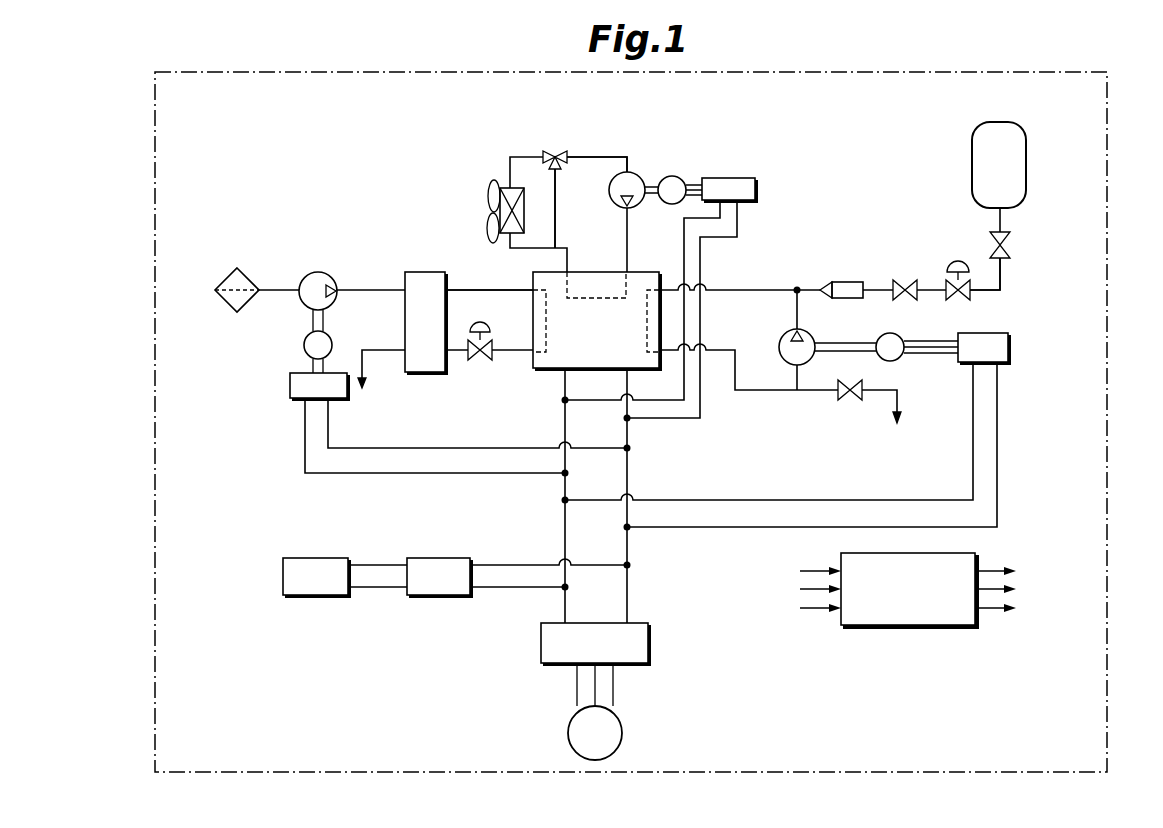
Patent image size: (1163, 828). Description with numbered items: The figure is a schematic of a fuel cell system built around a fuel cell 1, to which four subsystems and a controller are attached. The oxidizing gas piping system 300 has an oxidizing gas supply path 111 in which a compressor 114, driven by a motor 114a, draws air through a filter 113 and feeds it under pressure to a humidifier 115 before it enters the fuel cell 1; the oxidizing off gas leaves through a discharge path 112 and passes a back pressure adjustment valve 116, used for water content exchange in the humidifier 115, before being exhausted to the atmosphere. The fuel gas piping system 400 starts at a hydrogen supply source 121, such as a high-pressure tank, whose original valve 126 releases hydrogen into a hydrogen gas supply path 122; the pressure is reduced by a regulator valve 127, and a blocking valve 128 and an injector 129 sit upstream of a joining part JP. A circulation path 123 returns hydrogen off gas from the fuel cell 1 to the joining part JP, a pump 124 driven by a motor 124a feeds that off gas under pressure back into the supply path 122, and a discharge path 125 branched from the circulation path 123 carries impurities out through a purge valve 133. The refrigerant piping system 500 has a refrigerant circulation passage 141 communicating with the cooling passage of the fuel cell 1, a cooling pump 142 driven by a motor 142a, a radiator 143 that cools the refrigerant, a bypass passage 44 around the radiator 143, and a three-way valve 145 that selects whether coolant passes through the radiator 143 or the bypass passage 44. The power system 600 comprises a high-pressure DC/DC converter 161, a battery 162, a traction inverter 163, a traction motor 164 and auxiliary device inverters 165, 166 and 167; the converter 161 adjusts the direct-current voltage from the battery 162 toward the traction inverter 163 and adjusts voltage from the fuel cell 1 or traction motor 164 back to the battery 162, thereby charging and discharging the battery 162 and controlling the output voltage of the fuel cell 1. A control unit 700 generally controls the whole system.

The fuel cell 1 is at (540, 372).
The bypass passage 44 is at (557, 207).
The oxidizing gas supply path 111 is at (475, 289).
The discharge path 112 is at (376, 358).
The filter 113 is at (247, 268).
The compressor 114 is at (314, 272).
The motor 114a is at (304, 345).
The humidifier 115 is at (422, 374).
The back pressure adjustment valve 116 is at (478, 362).
The hydrogen supply source 121 is at (1027, 163).
The hydrogen gas supply path 122 is at (1001, 270).
The circulation path 123 is at (765, 393).
The pump 124 is at (782, 336).
The motor 124a is at (879, 335).
The discharge path 125 is at (899, 395).
The original valve 126 is at (1008, 238).
The regulator valve 127 is at (972, 293).
The blocking valve 128 is at (904, 280).
The injector 129 is at (847, 282).
The purge valve 133 is at (850, 401).
The refrigerant circulation passage 141 is at (602, 156).
The cooling pump 142 is at (638, 173).
The motor 142a is at (684, 176).
The radiator 143 is at (489, 196).
The three-way valve 145 is at (554, 151).
The high-pressure DC/DC converter 161 is at (432, 558).
The battery 162 is at (305, 558).
The traction inverter 163 is at (651, 640).
The traction motor 164 is at (622, 733).
The auxiliary device inverter 165 is at (290, 385).
The auxiliary device inverter 166 is at (1011, 348).
The auxiliary device inverter 167 is at (758, 188).
The oxidizing gas piping system 300 is at (392, 251).
The fuel gas piping system 400 is at (951, 216).
The refrigerant piping system 500 is at (506, 151).
The power system 600 is at (701, 474).
The control unit 700 is at (907, 626).
The joining part JP is at (796, 287).